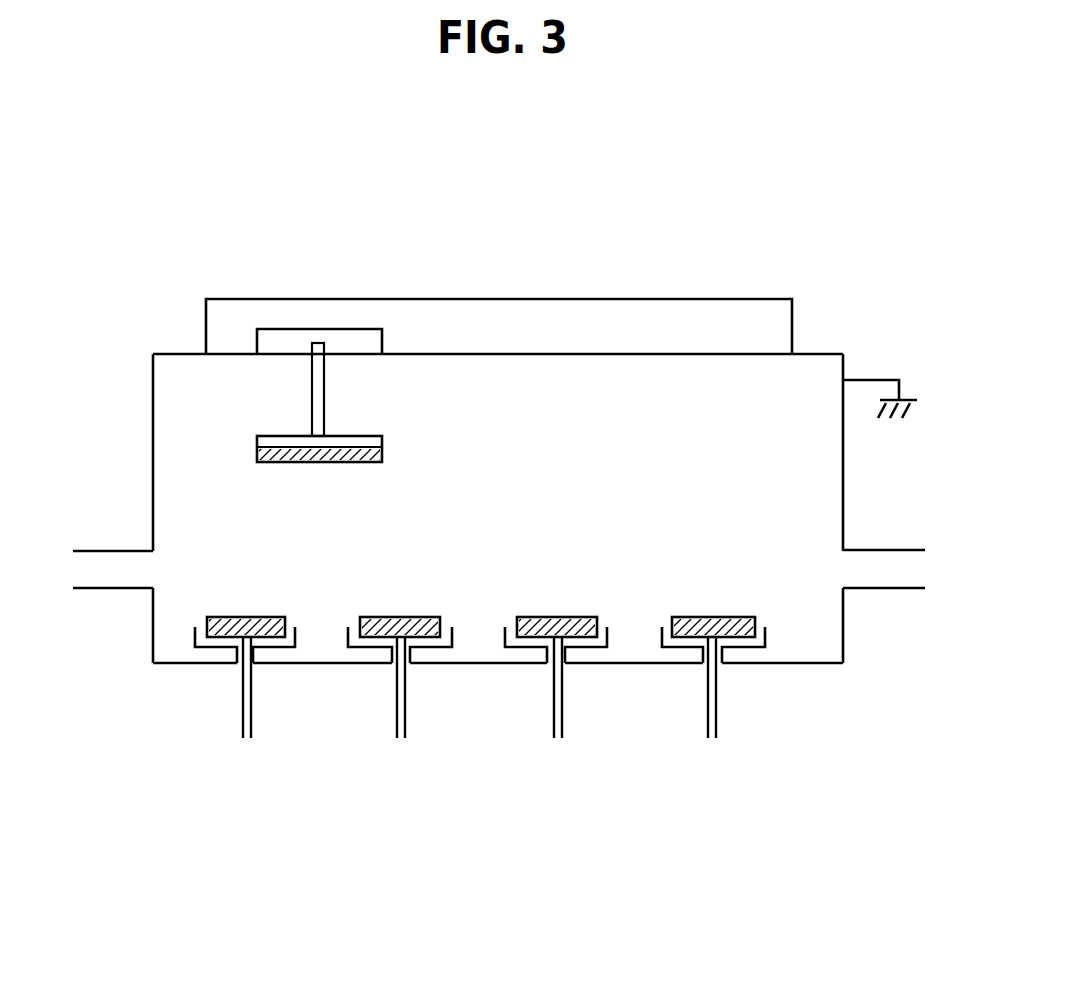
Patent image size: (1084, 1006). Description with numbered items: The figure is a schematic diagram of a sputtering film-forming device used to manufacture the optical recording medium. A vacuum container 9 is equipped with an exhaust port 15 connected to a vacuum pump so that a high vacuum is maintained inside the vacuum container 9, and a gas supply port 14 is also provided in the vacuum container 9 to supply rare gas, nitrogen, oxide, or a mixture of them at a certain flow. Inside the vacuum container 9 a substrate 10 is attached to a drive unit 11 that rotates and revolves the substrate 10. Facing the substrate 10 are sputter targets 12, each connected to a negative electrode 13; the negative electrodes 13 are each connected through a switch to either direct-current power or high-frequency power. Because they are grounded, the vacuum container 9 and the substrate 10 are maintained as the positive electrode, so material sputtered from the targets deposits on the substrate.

The vacuum container 9 is at (822, 354).
The substrate 10 is at (382, 457).
The drive unit 11 is at (268, 329).
The sputter targets 12 is at (412, 614).
The negative electrodes 13 is at (401, 730).
The gas supply port 14 is at (108, 551).
The exhaust port 15 is at (880, 550).